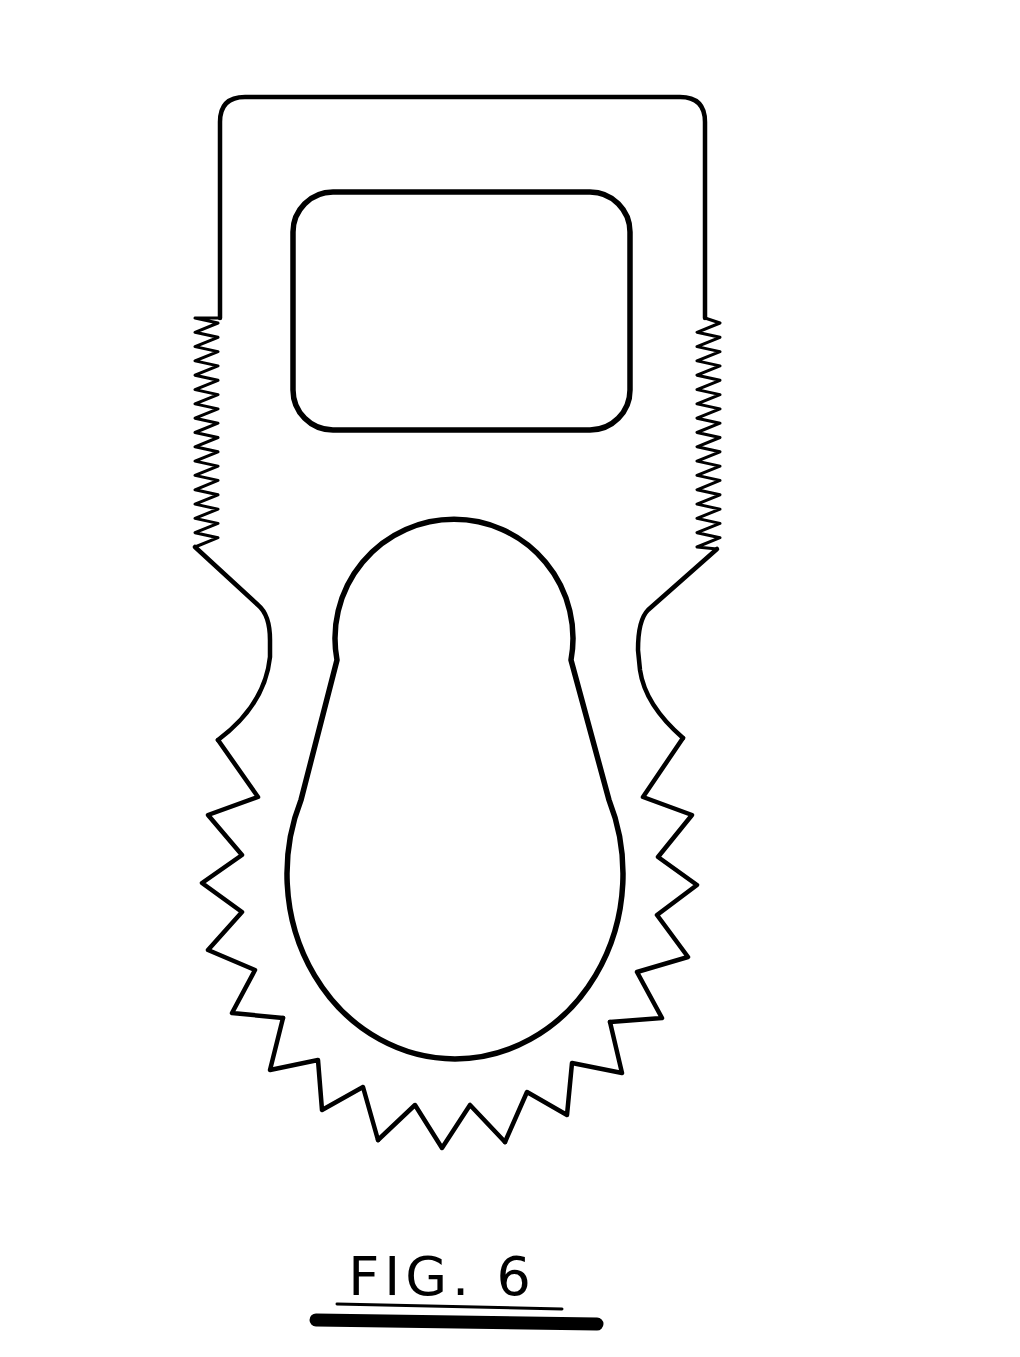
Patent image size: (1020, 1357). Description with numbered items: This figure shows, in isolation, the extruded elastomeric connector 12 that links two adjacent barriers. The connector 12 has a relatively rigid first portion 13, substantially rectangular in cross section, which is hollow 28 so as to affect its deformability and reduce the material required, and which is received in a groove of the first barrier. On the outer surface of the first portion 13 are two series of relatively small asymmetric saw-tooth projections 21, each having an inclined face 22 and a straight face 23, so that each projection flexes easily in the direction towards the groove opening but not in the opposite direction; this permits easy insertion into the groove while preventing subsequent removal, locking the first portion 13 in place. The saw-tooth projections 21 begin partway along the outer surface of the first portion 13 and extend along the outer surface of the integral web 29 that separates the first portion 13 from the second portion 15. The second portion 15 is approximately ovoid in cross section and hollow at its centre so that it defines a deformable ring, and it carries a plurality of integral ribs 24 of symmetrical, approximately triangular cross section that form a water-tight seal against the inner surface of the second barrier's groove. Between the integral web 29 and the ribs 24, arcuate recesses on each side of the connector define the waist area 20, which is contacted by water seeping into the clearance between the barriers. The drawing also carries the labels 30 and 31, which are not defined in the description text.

The extruded elastomeric connector 12 is at (464, 605).
The first portion 13 is at (262, 128).
The second portion 15 is at (587, 1030).
The waist area 20 is at (268, 628).
The saw-tooth projections 21 is at (720, 422).
The inclined face 22 is at (204, 323).
The straight face 23 is at (200, 425).
The ribs 24 is at (280, 1070).
The hollow 28 is at (563, 290).
The integral web 29 is at (498, 462).
The tip tooth 30 is at (447, 1093).
The lateral teeth 31 is at (275, 878).